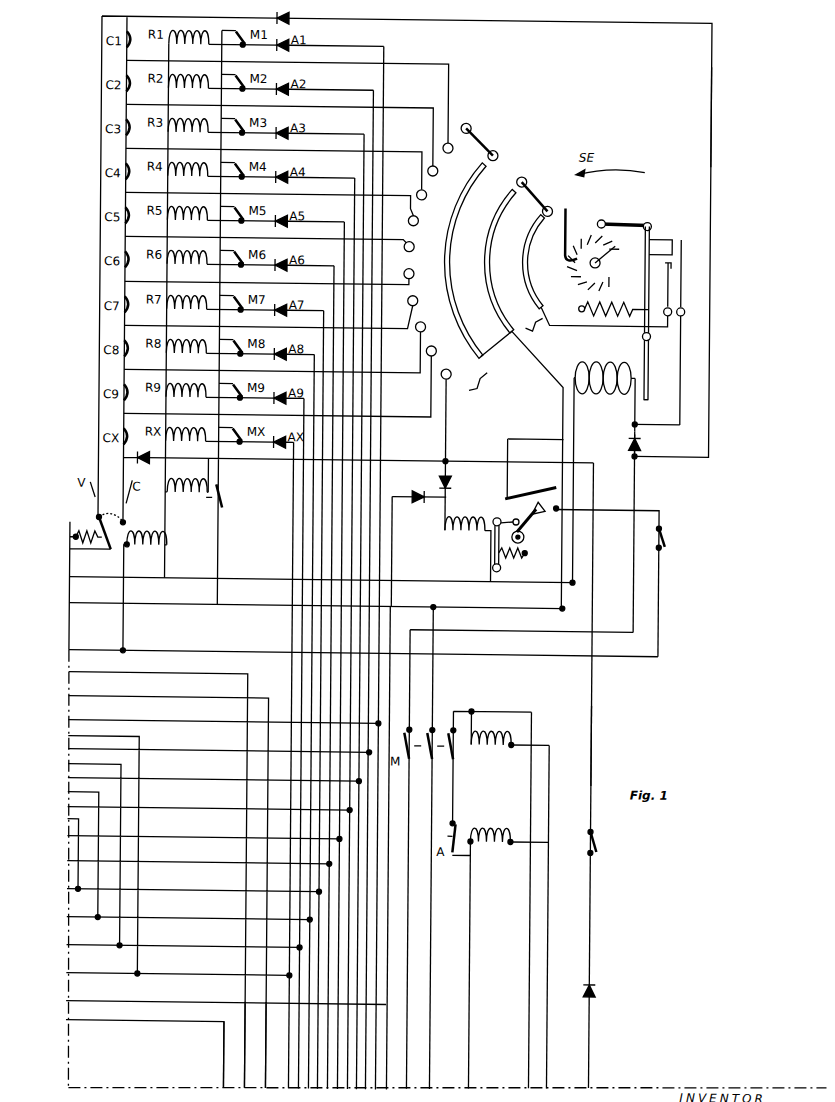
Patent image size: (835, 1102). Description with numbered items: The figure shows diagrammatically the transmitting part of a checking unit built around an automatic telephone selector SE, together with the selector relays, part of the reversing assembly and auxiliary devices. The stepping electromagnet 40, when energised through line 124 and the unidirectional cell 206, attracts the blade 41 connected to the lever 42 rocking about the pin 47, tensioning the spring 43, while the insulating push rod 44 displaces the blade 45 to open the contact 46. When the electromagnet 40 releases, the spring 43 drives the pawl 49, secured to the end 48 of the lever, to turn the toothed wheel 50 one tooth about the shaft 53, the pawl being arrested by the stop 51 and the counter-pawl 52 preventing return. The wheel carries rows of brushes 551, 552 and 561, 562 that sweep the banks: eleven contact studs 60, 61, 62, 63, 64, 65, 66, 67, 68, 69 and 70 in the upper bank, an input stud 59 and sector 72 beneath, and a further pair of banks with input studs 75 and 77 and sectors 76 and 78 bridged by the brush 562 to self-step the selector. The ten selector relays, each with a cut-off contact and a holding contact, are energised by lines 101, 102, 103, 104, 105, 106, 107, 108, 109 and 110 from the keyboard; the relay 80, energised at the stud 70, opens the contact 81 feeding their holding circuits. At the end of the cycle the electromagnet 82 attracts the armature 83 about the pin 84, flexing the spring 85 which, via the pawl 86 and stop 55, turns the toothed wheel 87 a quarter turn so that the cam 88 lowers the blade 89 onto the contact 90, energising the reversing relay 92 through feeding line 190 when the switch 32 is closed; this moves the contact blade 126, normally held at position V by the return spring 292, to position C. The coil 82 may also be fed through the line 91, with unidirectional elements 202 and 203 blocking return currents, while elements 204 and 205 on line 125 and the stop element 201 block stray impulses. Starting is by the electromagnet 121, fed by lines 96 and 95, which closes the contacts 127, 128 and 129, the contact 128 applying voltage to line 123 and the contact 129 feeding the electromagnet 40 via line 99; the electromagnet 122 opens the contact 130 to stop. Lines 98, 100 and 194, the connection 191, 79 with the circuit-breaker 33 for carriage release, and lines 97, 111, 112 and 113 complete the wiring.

The unidirectional element 205 is at (290, 17).
The line 125 is at (712, 112).
The unidirectional element 204 is at (141, 465).
The contact stud 60 is at (473, 119).
The contact stud 61 is at (459, 154).
The contact stud 62 is at (441, 176).
The contact stud 63 is at (430, 200).
The contact stud 64 is at (422, 225).
The contact stud 65 is at (420, 249).
The contact stud 66 is at (420, 276).
The contact stud 67 is at (424, 304).
The contact stud 68 is at (432, 329).
The contact stud 69 is at (441, 355).
The contact stud 70 is at (455, 449).
The input stud 59 is at (504, 159).
The brush 561 is at (491, 141).
The input stud 75 is at (528, 176).
The input stud 77 is at (531, 213).
The brush 562 is at (541, 196).
The contact sector 72 is at (465, 260).
The contact sector 76 is at (500, 261).
The contact sector 78 is at (537, 261).
The brush 551 is at (490, 383).
The brush 552 is at (596, 327).
The toothed wheel 50 is at (582, 270).
The shaft 53 is at (620, 241).
The counter-pawl 52 is at (560, 234).
The pawl 49 is at (624, 216).
The stop 51 is at (590, 217).
The end of lever 48 is at (647, 218).
The lever 42 is at (647, 286).
The blade 41 is at (652, 362).
The pin 47 is at (645, 333).
The insulating push rod 44 is at (663, 241).
The blade 45 is at (685, 247).
The contact 46 is at (676, 272).
The spring 43 is at (606, 312).
The electromagnet 40 is at (604, 473).
The unidirectional cell 206 is at (644, 438).
The line 124 is at (638, 544).
The feeding line 190 is at (603, 506).
The switch 32 is at (668, 531).
The unidirectional element 202 is at (419, 488).
The unidirectional element 203 is at (453, 480).
The line 91 is at (396, 550).
The electromagnet of reversing relay 82 is at (468, 549).
The armature 83 is at (495, 520).
The pin 84 is at (506, 573).
The spring 85 is at (519, 559).
The pawl 86 is at (509, 514).
The toothed wheel 87 is at (528, 536).
The stop 55 is at (526, 520).
The cam 88 is at (546, 518).
The contact blade 89 is at (530, 491).
The contact 90 is at (561, 503).
The line 123 is at (451, 604).
The contact blade 126 is at (109, 518).
The return spring 292 is at (84, 583).
The reversing relay 92 is at (145, 591).
The relay 80 is at (186, 499).
The contact 81 is at (231, 496).
The line 110 is at (289, 765).
The line 109 is at (299, 743).
The line 108 is at (309, 721).
The line 107 is at (318, 700).
The line 106 is at (328, 677).
The line 105 is at (338, 655).
The line 104 is at (349, 633).
The line 103 is at (358, 611).
The line 102 is at (367, 589).
The line 101 is at (377, 567).
The line 100 is at (386, 847).
The line 99 is at (403, 859).
The line 98 is at (426, 846).
The conductor 97 is at (464, 964).
The line 96 is at (524, 900).
The line 95 is at (542, 916).
The connection 79 is at (585, 775).
The connection 191 is at (600, 733).
The circuit-breaker 33 is at (606, 840).
The stop element 201 is at (604, 982).
The contact 129 is at (412, 755).
The contact 128 is at (429, 755).
The contact 127 is at (459, 755).
The electromagnet 121 is at (496, 740).
The contact 130 is at (463, 828).
The electromagnet 122 is at (506, 845).
The line 194 is at (176, 781).
The conductor 113 is at (221, 1054).
The conductor 112 is at (242, 1045).
The conductor 111 is at (263, 1045).